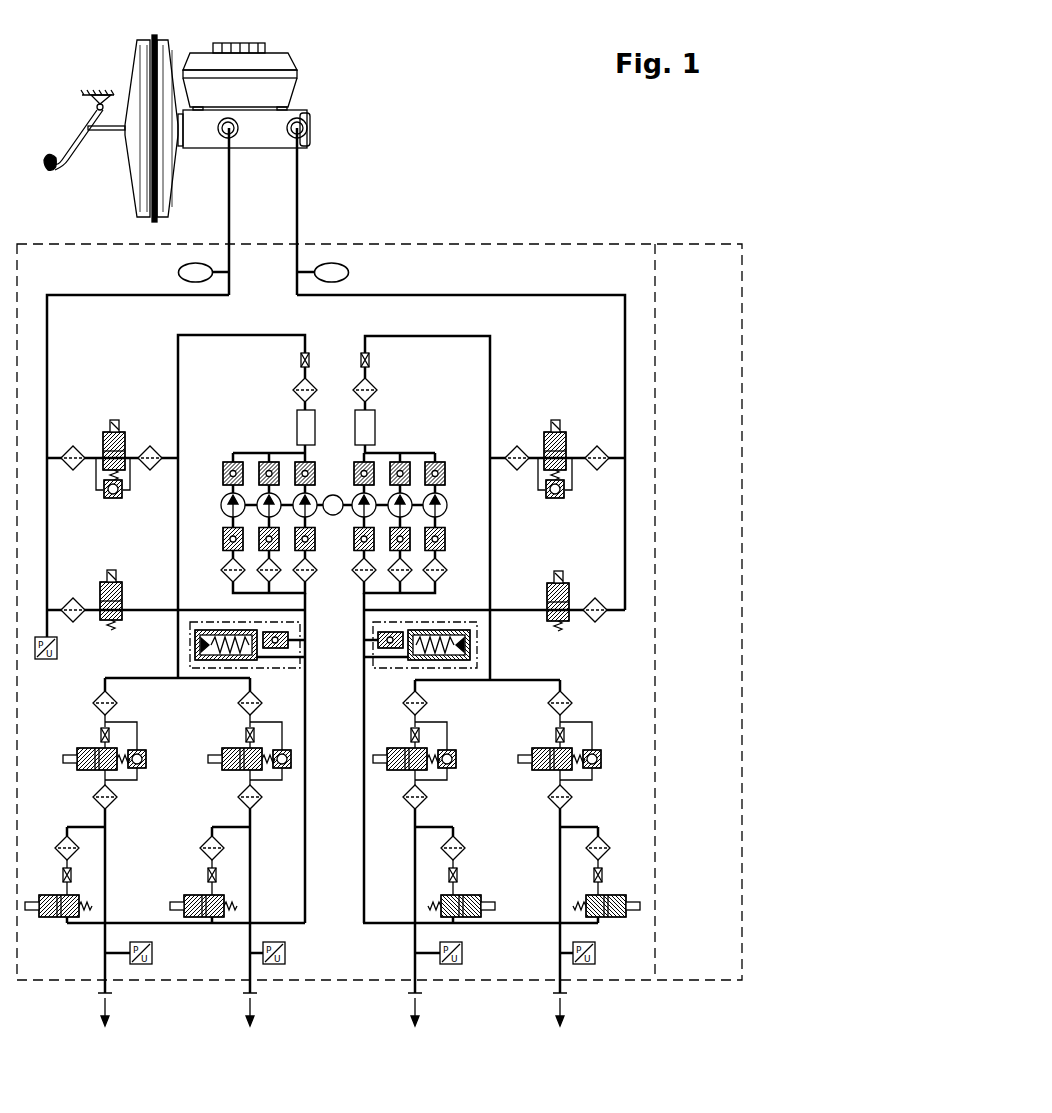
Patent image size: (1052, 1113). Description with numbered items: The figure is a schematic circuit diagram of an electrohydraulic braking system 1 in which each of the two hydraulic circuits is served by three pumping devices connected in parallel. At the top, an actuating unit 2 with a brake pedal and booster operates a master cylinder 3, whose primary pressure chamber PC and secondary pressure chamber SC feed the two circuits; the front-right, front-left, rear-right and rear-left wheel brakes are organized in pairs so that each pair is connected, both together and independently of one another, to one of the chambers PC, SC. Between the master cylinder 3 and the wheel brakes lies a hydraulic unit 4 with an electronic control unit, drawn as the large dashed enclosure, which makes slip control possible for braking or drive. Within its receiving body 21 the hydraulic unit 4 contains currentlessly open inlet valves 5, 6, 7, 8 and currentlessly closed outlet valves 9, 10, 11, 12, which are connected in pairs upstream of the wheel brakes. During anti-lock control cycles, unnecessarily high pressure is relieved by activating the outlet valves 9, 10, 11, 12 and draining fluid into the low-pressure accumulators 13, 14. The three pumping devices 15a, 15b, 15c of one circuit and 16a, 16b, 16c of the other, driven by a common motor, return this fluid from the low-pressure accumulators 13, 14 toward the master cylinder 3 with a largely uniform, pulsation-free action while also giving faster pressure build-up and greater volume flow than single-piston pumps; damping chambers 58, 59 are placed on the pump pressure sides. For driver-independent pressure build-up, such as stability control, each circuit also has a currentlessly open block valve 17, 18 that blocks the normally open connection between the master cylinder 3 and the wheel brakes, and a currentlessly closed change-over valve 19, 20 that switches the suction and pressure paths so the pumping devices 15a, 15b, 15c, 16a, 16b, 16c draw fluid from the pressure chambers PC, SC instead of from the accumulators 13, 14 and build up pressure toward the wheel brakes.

The electrohydraulic braking system 1 is at (433, 152).
The actuating unit 2 is at (118, 64).
The master cylinder 3 is at (262, 150).
The hydraulic unit 4 is at (467, 246).
The receiving body 21 is at (589, 265).
The inlet valve 5 is at (90, 774).
The inlet valve 6 is at (235, 774).
The inlet valve 7 is at (400, 774).
The inlet valve 8 is at (545, 774).
The outlet valve 9 is at (58, 893).
The outlet valve 10 is at (203, 893).
The outlet valve 11 is at (463, 893).
The outlet valve 12 is at (608, 893).
The low-pressure accumulator 13 is at (208, 665).
The low-pressure accumulator 14 is at (458, 665).
The pumping device 15a is at (222, 520).
The pumping device 15b is at (255, 498).
The pumping device 15c is at (293, 498).
The pumping device 16a is at (373, 498).
The pumping device 16b is at (410, 498).
The pumping device 16c is at (445, 520).
The block valve 17 is at (103, 440).
The block valve 18 is at (567, 440).
The change-over valve 19 is at (104, 588).
The change-over valve 20 is at (566, 588).
The damping chamber 58 is at (297, 425).
The damping chamber 59 is at (375, 425).
The primary pressure chamber PC is at (224, 140).
The secondary pressure chamber SC is at (310, 128).